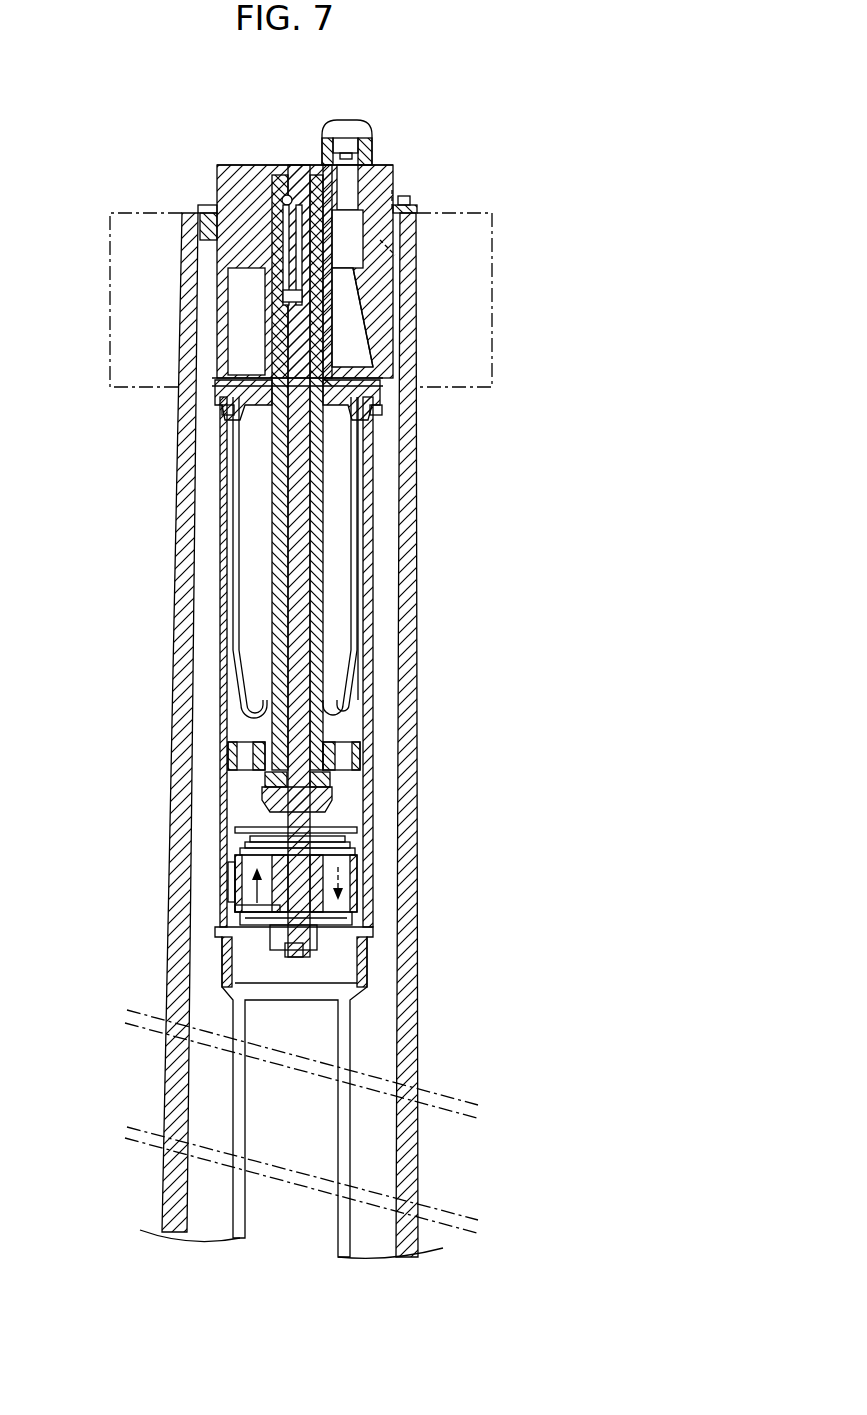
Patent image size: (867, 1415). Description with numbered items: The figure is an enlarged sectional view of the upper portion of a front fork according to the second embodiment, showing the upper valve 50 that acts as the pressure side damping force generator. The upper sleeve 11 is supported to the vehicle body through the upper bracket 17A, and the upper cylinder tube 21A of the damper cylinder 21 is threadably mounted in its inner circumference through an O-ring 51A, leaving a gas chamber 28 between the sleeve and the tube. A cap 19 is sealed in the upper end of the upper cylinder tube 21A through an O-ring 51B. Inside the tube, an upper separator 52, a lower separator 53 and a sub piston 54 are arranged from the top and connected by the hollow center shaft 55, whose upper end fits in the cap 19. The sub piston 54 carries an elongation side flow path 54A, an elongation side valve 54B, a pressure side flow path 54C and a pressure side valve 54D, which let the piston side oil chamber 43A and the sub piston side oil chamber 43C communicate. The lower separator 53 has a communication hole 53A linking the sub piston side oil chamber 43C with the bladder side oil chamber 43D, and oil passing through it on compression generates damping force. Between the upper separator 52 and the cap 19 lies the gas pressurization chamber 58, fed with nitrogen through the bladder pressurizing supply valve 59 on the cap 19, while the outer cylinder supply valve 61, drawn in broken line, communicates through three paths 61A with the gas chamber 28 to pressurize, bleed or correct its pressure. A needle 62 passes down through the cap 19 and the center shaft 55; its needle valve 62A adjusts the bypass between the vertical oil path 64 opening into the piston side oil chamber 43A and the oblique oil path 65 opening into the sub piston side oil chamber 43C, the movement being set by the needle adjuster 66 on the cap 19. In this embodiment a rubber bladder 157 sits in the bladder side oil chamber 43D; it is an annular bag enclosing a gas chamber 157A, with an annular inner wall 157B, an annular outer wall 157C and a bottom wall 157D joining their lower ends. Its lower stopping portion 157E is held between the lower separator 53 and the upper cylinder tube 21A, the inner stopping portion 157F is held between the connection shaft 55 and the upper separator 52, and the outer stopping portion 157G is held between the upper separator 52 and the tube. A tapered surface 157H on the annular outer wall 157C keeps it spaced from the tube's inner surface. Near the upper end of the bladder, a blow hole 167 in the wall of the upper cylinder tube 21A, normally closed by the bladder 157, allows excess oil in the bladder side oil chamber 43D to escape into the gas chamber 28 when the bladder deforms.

The upper sleeve 11 is at (185, 1090).
The upper bracket 17A is at (110, 350).
The cap 19 is at (393, 166).
The damper cylinder 21 is at (238, 1194).
The upper cylinder tube 21A is at (222, 600).
The gas chamber 28 is at (392, 462).
The piston side oil chamber 43A is at (305, 1143).
The sub piston side oil chamber 43C is at (355, 794).
The bladder side oil chamber 43D is at (240, 698).
The upper valve 50 is at (390, 832).
The O-ring 51A is at (405, 238).
The O-ring 51B is at (400, 205).
The upper separator 52 is at (383, 410).
The lower separator 53 is at (365, 770).
The communication hole 53A is at (236, 746).
The sub piston 54 is at (357, 876).
The elongation side flow path 54A is at (327, 904).
The elongation side valve 54B is at (320, 930).
The pressure side flow path 54C is at (232, 882).
The pressure side valve 54D is at (250, 840).
The center shaft 55 is at (345, 712).
The gas pressurization chamber 58 is at (347, 325).
The bladder pressurizing supply valve 59 is at (373, 143).
The outer cylinder supply valve 61 is at (392, 181).
The paths 61A is at (410, 249).
The needle 62 is at (290, 458).
The needle valve 62A is at (268, 781).
The oil path 64 is at (285, 918).
The oil path 65 is at (268, 800).
The needle adjuster 66 is at (288, 165).
The bladder 157 is at (523, 575).
The gas chamber 157A is at (347, 500).
The annular inner wall 157B is at (333, 592).
The annular outer wall 157C is at (330, 626).
The bottom wall 157D is at (350, 742).
The lower stopping portion 157E is at (360, 757).
The inner stopping portion 157F is at (340, 383).
The outer stopping portion 157G is at (385, 393).
The tapered surface 157H is at (340, 663).
The blow hole 167 is at (230, 413).